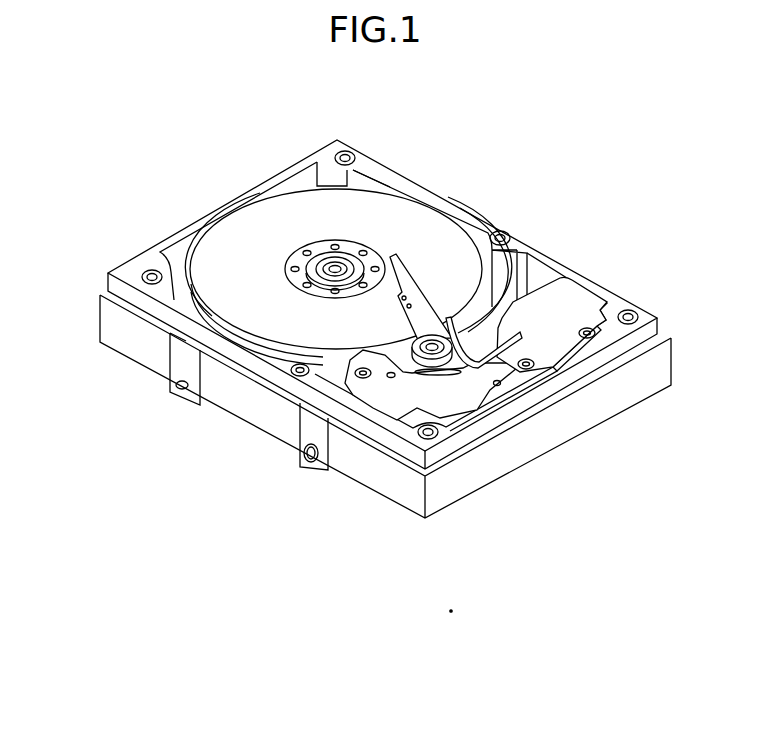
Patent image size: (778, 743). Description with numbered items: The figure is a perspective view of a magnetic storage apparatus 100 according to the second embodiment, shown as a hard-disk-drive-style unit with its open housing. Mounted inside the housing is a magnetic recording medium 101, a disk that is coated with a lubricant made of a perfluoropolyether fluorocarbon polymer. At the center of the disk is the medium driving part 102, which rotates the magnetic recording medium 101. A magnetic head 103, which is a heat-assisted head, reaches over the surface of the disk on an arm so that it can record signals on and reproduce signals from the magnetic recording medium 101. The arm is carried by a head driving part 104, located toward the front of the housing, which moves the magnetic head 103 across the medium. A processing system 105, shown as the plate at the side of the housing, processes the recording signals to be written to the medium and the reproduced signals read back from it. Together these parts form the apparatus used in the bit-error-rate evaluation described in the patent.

The magnetic storage apparatus 100 is at (105, 101).
The magnetic recording medium 101 is at (380, 223).
The medium driving part 102 is at (290, 253).
The magnetic head 103 is at (410, 263).
The head driving part 104 is at (455, 382).
The processing system 105 is at (568, 312).